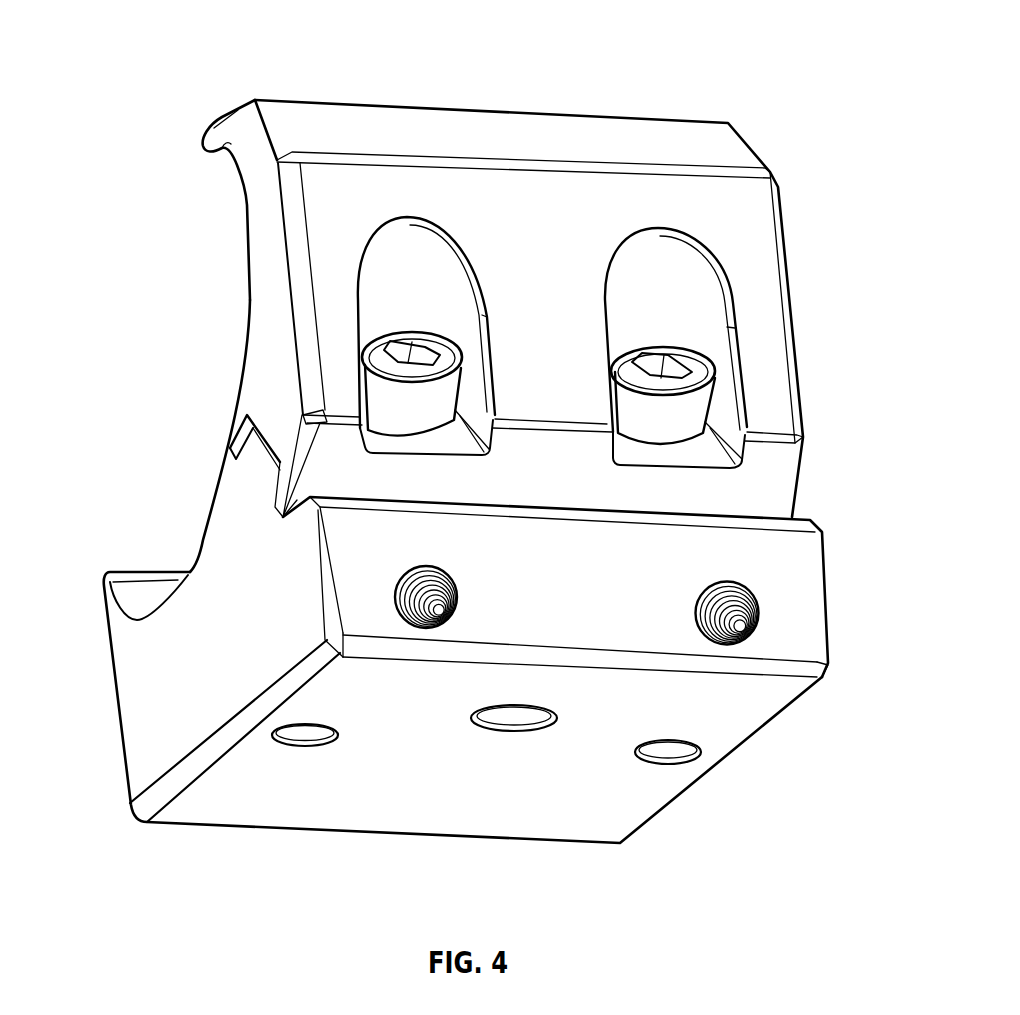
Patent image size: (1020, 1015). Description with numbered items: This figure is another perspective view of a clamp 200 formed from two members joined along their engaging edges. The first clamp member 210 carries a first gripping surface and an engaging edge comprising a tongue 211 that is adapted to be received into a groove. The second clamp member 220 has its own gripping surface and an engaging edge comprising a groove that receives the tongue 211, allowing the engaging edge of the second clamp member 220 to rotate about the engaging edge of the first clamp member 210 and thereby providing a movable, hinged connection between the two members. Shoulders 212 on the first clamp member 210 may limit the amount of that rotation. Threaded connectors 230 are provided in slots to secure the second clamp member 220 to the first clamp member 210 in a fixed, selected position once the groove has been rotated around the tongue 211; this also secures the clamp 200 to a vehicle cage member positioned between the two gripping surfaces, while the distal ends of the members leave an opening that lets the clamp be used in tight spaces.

The clamp 200 is at (326, 50).
The first clamp member 210 is at (147, 677).
The tongue 211 is at (258, 451).
The shoulders 212 is at (265, 427).
The second clamp member 220 is at (717, 148).
The threaded connectors 230 is at (403, 348).